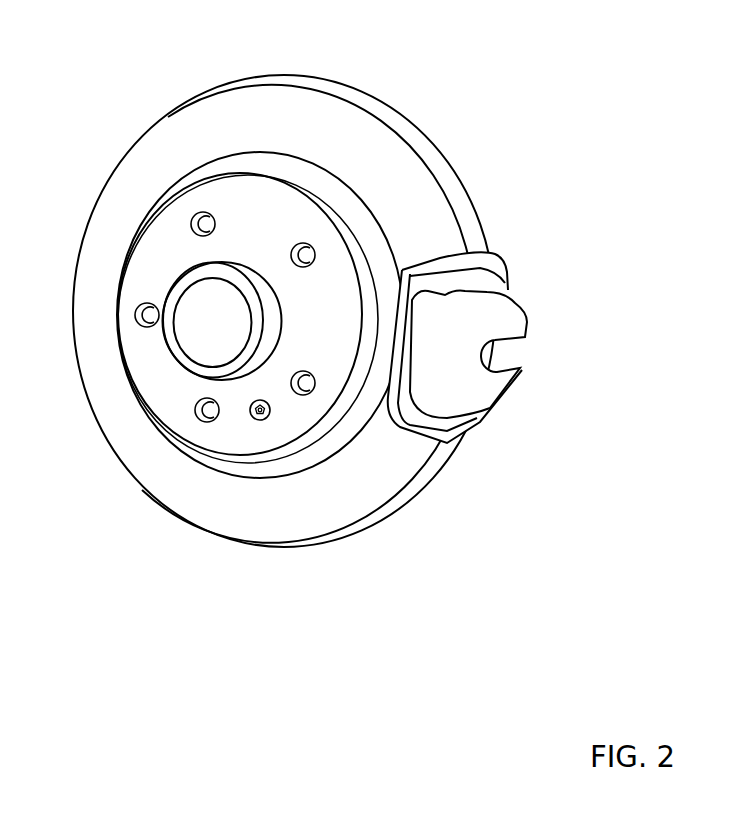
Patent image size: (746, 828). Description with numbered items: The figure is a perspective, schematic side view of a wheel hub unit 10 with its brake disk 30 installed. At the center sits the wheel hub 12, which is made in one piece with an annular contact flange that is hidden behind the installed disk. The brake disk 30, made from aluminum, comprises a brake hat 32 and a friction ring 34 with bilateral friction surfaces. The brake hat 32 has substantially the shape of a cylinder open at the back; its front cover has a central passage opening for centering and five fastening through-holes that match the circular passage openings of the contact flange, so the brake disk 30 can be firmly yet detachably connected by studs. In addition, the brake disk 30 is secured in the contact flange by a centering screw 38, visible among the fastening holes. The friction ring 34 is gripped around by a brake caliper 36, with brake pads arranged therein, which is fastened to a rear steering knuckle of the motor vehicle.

The wheel hub unit 10 is at (319, 300).
The brake disk 30 is at (273, 308).
The friction ring 34 is at (420, 185).
The brake hat 32 is at (148, 250).
The wheel hub 12 is at (272, 321).
The centering screw 38 is at (257, 418).
The brake caliper 36 is at (537, 284).